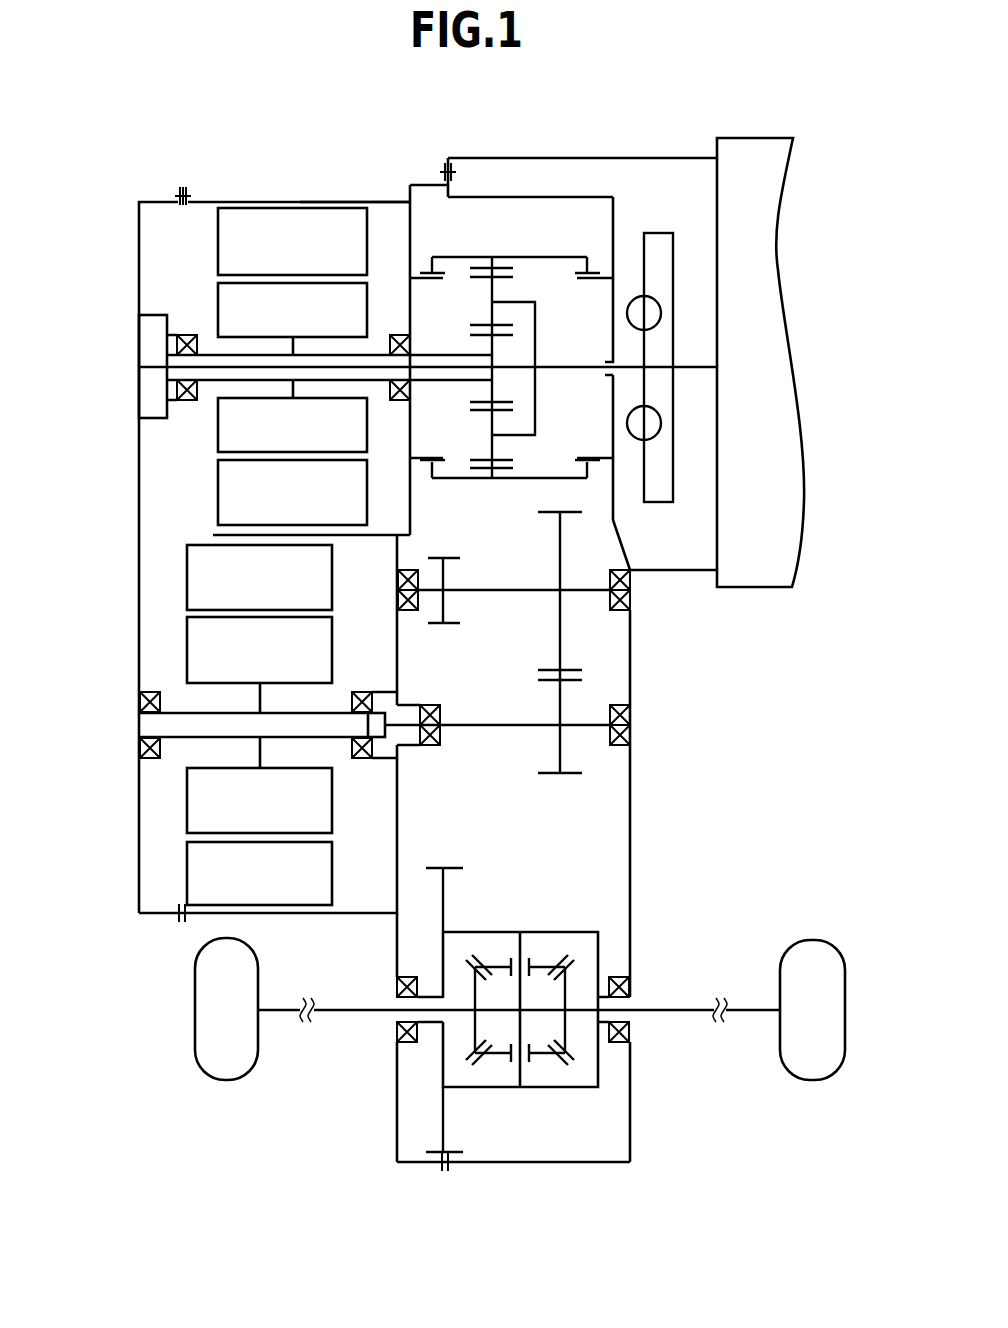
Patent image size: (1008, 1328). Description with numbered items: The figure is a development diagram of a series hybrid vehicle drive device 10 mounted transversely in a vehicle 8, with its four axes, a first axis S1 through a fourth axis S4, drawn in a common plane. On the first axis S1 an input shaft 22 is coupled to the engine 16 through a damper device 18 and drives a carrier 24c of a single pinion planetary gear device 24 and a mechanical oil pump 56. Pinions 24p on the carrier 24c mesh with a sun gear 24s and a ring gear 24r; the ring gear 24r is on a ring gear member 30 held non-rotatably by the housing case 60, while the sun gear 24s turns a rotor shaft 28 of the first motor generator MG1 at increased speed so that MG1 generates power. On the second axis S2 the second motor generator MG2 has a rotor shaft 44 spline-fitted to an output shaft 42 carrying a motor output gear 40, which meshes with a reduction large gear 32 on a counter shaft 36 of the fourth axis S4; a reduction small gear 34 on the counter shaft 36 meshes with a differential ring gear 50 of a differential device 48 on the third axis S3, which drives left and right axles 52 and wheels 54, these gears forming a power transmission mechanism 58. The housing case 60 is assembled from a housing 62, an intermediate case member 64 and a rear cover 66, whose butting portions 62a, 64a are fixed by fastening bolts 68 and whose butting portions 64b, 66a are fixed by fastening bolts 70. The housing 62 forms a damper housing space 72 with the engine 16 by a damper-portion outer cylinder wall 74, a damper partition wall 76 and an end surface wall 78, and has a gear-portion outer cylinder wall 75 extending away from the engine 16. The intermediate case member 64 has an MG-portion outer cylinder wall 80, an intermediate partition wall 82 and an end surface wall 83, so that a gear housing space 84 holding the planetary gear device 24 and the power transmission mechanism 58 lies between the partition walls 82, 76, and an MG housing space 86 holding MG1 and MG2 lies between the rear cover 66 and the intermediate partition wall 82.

The vehicle 8 is at (262, 1158).
The vehicle drive device 10 is at (695, 100).
The engine 16 is at (748, 152).
The damper device 18 is at (674, 254).
The input shaft 22 is at (555, 372).
The planetary gear device 24 is at (487, 485).
The sun gear 24s is at (470, 404).
The pinions 24p is at (472, 461).
The carrier 24c is at (538, 324).
The ring gear 24r is at (525, 252).
The rotor shaft 28 is at (430, 353).
The ring gear member 30 is at (463, 257).
The reduction large gear 32 is at (593, 655).
The reduction small gear 34 is at (448, 625).
The counter shaft 36 is at (510, 593).
The motor output gear 40 is at (558, 775).
The output shaft 42 is at (497, 728).
The rotor shaft 44 is at (328, 742).
The differential device 48 is at (488, 1088).
The differential ring gear 50 is at (448, 866).
The axles 52 is at (343, 1015).
The wheels 54 is at (218, 1045).
The oil pump 56 is at (152, 335).
The power transmission mechanism 58 is at (607, 1122).
The housing case 60 is at (147, 184).
The housing 62 is at (525, 132).
The butting portion 62a is at (448, 1176).
The intermediate case member 64 is at (357, 183).
The butting portion 64a is at (442, 1175).
The butting portion 64b is at (190, 190).
The rear cover 66 is at (138, 280).
The butting portion 66a is at (178, 188).
The fastening bolts 68 is at (452, 172).
The fastening bolts 70 is at (172, 916).
The damper housing space 72 is at (693, 561).
The damper-portion outer cylinder wall 74 is at (607, 156).
The gear-portion outer cylinder wall 75 is at (560, 1165).
The damper partition wall 76 is at (637, 216).
The end surface wall 78 is at (632, 803).
The MG-portion outer cylinder wall 80 is at (322, 202).
The intermediate partition wall 82 is at (408, 292).
The end surface wall 83 is at (397, 1082).
The gear housing space 84 is at (592, 238).
The MG housing space 86 is at (186, 261).
The first motor generator MG1 is at (281, 201).
The second motor generator MG2 is at (155, 828).
The first axis S1 is at (294, 375).
The second axis S2 is at (363, 752).
The third axis S3 is at (499, 1036).
The fourth axis S4 is at (531, 672).